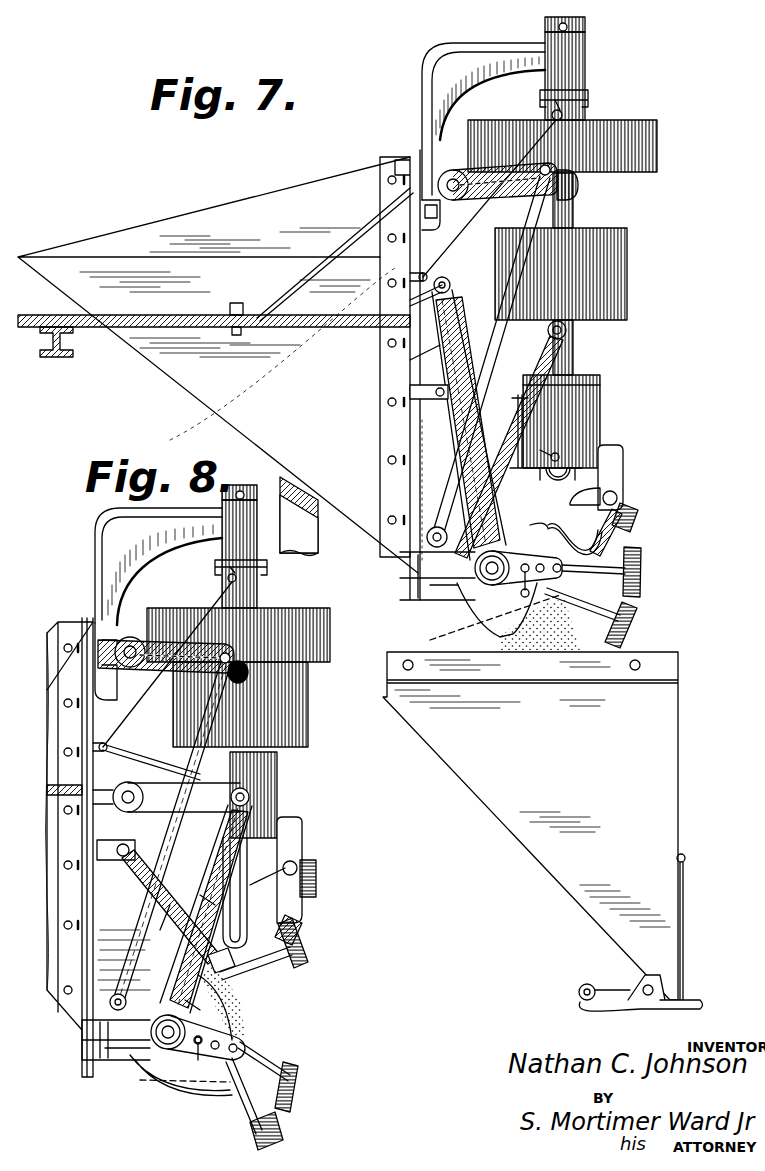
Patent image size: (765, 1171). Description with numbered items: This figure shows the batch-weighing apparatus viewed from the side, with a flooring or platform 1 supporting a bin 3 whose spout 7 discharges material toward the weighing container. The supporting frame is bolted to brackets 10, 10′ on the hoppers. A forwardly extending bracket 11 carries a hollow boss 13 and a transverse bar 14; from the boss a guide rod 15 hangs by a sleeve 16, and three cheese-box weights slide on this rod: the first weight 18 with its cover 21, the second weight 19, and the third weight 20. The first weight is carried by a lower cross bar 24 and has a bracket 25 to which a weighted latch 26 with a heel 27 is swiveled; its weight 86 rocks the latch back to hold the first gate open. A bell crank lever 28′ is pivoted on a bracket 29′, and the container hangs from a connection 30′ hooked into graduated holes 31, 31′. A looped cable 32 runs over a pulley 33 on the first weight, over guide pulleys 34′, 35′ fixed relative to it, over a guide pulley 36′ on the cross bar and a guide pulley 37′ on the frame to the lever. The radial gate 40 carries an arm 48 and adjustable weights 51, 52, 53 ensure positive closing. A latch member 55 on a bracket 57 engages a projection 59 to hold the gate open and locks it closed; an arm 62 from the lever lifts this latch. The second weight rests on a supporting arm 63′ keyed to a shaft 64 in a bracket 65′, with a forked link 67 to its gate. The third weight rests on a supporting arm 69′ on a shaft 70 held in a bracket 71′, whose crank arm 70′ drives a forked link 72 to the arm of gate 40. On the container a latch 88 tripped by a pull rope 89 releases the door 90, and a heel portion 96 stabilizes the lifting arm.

In FIG. 7, the flooring or platform 1 is at (158, 328).
In FIG. 7, the bin 3 is at (658, 730).
In FIG. 7, the spout 7 is at (427, 490).
In FIG. 8, the spout 7 is at (105, 955).
In FIG. 7, the bracket 10 is at (385, 287).
In FIG. 7, the bracket 10′ is at (343, 247).
In FIG. 7, the forwardly extending bracket 11 is at (456, 60).
In FIG. 8, the forwardly extending bracket 11 is at (118, 541).
In FIG. 7, the hollow boss 13 is at (570, 60).
In FIG. 8, the hollow boss 13 is at (238, 528).
In FIG. 7, the transverse bar 14 is at (590, 92).
In FIG. 8, the transverse bar 14 is at (266, 565).
In FIG. 7, the guide rod 15 is at (575, 356).
In FIG. 8, the guide rod 15 is at (250, 880).
In FIG. 7, the sleeve 16 is at (586, 27).
In FIG. 8, the sleeve 16 is at (222, 495).
In FIG. 7, the first weight 18 is at (606, 412).
In FIG. 8, the first weight 18 is at (280, 810).
In FIG. 7, the second weight 19 is at (606, 272).
In FIG. 8, the second weight 19 is at (294, 711).
In FIG. 7, the third weight 20 is at (632, 147).
In FIG. 8, the third weight 20 is at (317, 632).
In FIG. 7, the cover 21 is at (600, 392).
In FIG. 7, the lower cross bar 24 is at (575, 529).
In FIG. 7, the bracket 25 is at (622, 462).
In FIG. 8, the bracket 25 is at (302, 830).
In FIG. 7, the weighted latch 26 is at (612, 553).
In FIG. 8, the weighted latch 26 is at (305, 915).
In FIG. 7, the heel 27 is at (613, 488).
In FIG. 8, the heel 27 is at (280, 885).
In FIG. 7, the bell crank lever 28′ is at (450, 372).
In FIG. 8, the bell crank lever 28′ is at (197, 900).
In FIG. 7, the bracket 29′ is at (462, 575).
In FIG. 8, the bracket 29′ is at (125, 1052).
In FIG. 7, the connection 30′ is at (572, 642).
In FIG. 8, the connection 30′ is at (185, 1070).
In FIG. 8, the hole 31 is at (247, 1050).
In FIG. 7, the hole 31′ is at (563, 576).
In FIG. 7, the looped cable 32 is at (532, 132).
In FIG. 8, the looped cable 32 is at (138, 690).
In FIG. 7, the guide wheel or pulley 33 is at (548, 514).
In FIG. 7, the guide pulley 34′ is at (546, 437).
In FIG. 7, the guide pulley 35′ is at (560, 456).
In FIG. 7, the guide pulley 36′ is at (563, 115).
In FIG. 8, the guide pulley 36′ is at (232, 574).
In FIG. 7, the guide pulley 37′ is at (430, 273).
In FIG. 8, the guide pulley 37′ is at (103, 743).
In FIG. 7, the radial gate 40 is at (498, 640).
In FIG. 8, the radial gate 40 is at (232, 1005).
In FIG. 7, the arm 48 is at (440, 590).
In FIG. 8, the arm 48 is at (115, 1042).
In FIG. 7, the adjustable weight 51 is at (642, 576).
In FIG. 8, the adjustable weight 51 is at (284, 1142).
In FIG. 8, the adjustable weight 52 is at (300, 1109).
In FIG. 7, the adjustable weight 53 is at (635, 620).
In FIG. 8, the adjustable weight 53 is at (305, 960).
In FIG. 7, the latch member 55 is at (530, 475).
In FIG. 8, the latch member 55 is at (156, 882).
In FIG. 7, the bracket 57 is at (414, 400).
In FIG. 8, the bracket 57 is at (112, 858).
In FIG. 8, the projection 59 is at (236, 958).
In FIG. 7, the arm 62 is at (455, 447).
In FIG. 8, the arm 62 is at (190, 1000).
In FIG. 7, the supporting arm 63′ is at (568, 333).
In FIG. 8, the supporting arm 63′ is at (249, 795).
In FIG. 7, the shaft 64 is at (463, 303).
In FIG. 8, the shaft 64 is at (112, 808).
In FIG. 7, the bracket 65′ is at (440, 334).
In FIG. 8, the bracket 65′ is at (108, 802).
In FIG. 8, the forked link 67 is at (160, 905).
In FIG. 7, the supporting arm 69′ is at (582, 190).
In FIG. 8, the supporting arm 69′ is at (249, 670).
In FIG. 7, the shaft 70 is at (453, 180).
In FIG. 8, the shaft 70 is at (130, 648).
In FIG. 7, the crank arm 70′ is at (490, 165).
In FIG. 8, the crank arm 70′ is at (166, 640).
In FIG. 7, the bracket 71′ is at (440, 210).
In FIG. 8, the bracket 71′ is at (100, 660).
In FIG. 7, the forked link 72 is at (522, 212).
In FIG. 8, the forked link 72 is at (175, 830).
In FIG. 7, the weight 86 is at (640, 512).
In FIG. 8, the weight 86 is at (318, 878).
In FIG. 7, the latch 88 is at (615, 1006).
In FIG. 7, the pull rope 89 is at (579, 990).
In FIG. 7, the door 90 is at (684, 932).
In FIG. 8, the heel portion 96 is at (165, 768).